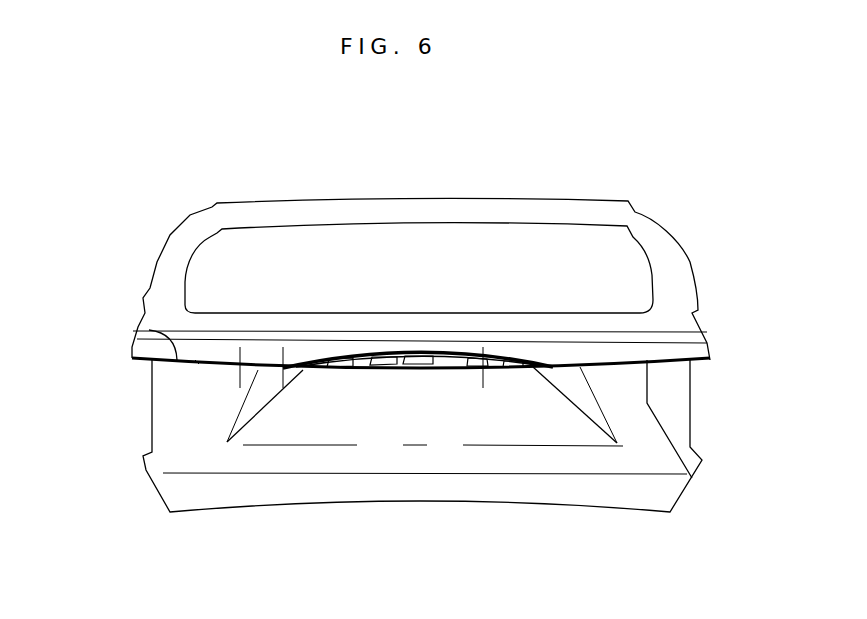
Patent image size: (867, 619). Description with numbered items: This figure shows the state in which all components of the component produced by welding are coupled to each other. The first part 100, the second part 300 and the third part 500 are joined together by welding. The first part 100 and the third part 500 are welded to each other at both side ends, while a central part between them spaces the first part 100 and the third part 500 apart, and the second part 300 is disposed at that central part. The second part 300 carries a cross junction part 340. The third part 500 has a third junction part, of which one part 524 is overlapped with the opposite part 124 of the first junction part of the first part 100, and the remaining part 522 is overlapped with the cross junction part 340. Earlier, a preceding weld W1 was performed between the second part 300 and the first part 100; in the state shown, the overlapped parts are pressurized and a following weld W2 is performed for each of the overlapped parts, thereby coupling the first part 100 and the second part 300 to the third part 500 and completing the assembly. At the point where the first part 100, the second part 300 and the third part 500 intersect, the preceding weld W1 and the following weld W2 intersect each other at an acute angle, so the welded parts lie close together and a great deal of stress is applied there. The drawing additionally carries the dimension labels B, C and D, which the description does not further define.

The first part 100 is at (592, 176).
The second part 300 is at (354, 350).
The remaining part of the third junction part 522 is at (530, 358).
The part of the third junction part 524 is at (148, 332).
The third part 500 is at (262, 516).
The cross junction part 340 is at (502, 364).
The opposite part of the first junction part 124 is at (692, 478).
The preceding weld W1 is at (407, 352).
The following weld W2 is at (197, 362).
The dimension B is at (240, 388).
The dimension C is at (283, 388).
The dimension D is at (483, 388).